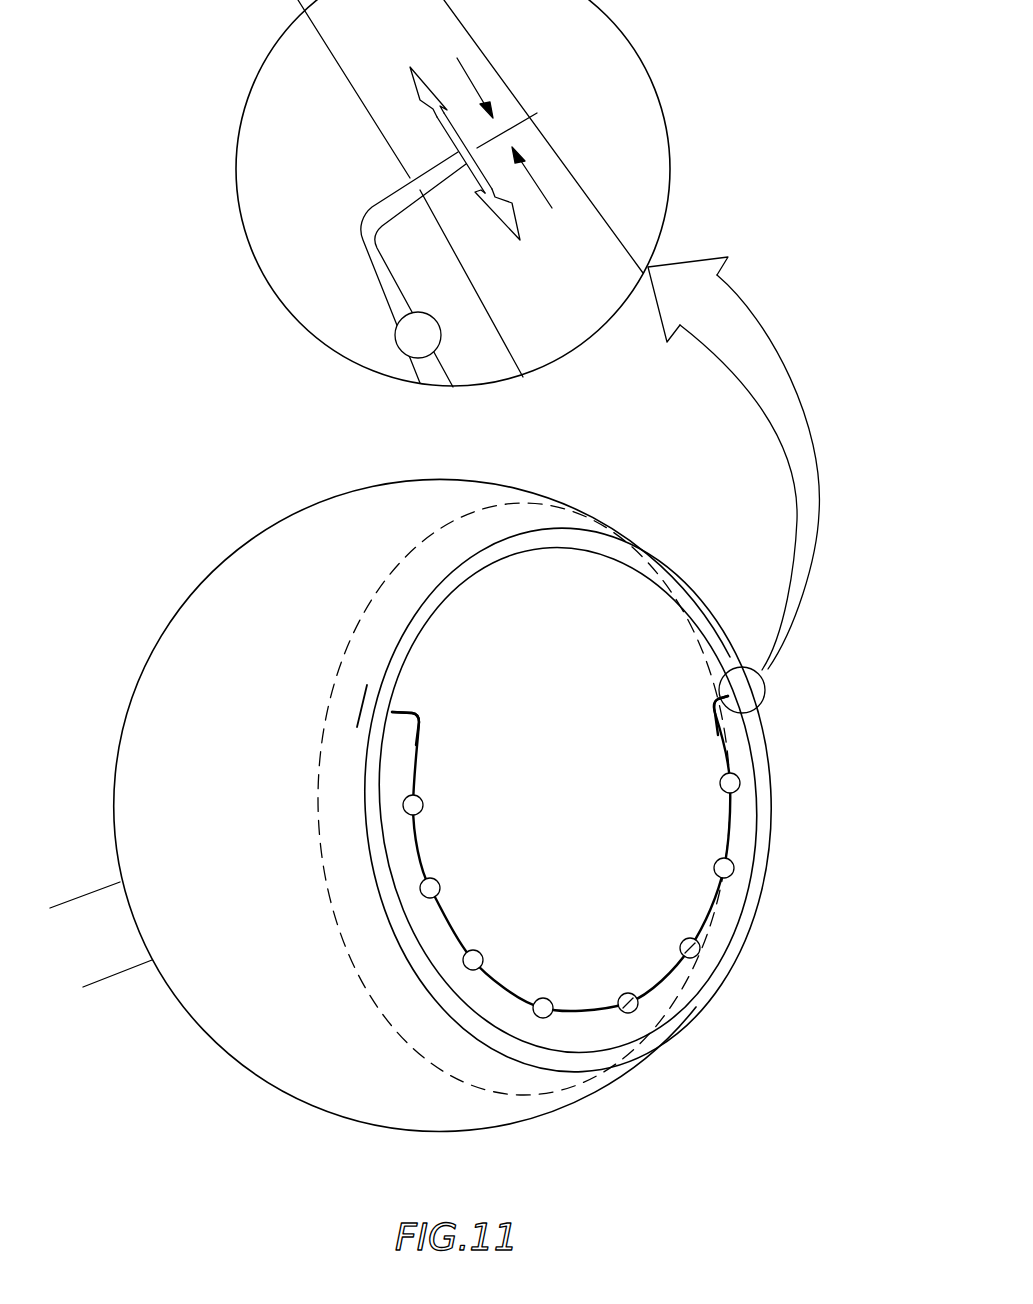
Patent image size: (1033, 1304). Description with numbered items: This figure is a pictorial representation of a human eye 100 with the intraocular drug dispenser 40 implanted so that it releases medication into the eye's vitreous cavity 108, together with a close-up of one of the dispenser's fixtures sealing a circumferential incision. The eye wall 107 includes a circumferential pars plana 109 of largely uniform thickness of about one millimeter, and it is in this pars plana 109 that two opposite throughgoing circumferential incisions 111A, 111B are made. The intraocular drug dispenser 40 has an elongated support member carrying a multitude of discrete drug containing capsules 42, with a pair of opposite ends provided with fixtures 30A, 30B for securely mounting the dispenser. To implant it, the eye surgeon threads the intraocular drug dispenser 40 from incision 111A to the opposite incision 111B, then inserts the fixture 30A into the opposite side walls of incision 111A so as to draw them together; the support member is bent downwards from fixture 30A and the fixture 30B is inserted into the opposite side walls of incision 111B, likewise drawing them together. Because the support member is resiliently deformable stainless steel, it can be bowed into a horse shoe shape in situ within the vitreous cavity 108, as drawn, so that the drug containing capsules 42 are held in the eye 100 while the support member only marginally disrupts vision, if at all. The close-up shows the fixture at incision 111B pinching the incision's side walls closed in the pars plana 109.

The eye 100 is at (213, 477).
The eye wall 107 is at (248, 1032).
The vitreous cavity 108 is at (592, 815).
The pars plana 109 is at (480, 525).
The circumferential incision 111A is at (342, 697).
The circumferential incision 111B is at (775, 697).
The fixture 30A is at (412, 707).
The fixture 30B is at (710, 697).
The intraocular drug dispenser 40 is at (504, 994).
The drug containing capsules 42 is at (684, 943).